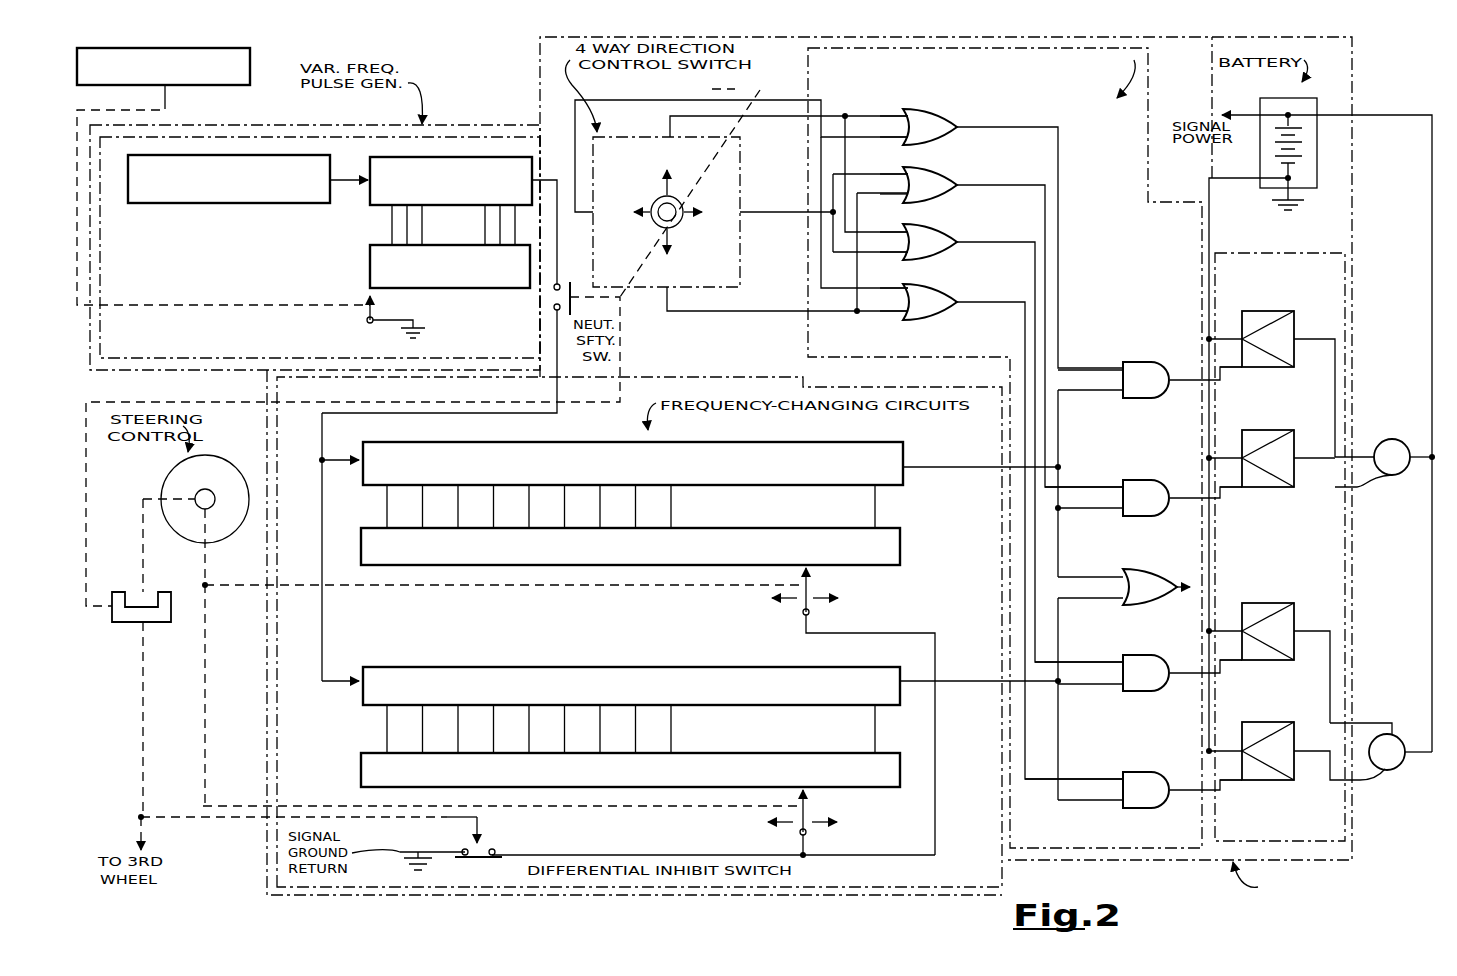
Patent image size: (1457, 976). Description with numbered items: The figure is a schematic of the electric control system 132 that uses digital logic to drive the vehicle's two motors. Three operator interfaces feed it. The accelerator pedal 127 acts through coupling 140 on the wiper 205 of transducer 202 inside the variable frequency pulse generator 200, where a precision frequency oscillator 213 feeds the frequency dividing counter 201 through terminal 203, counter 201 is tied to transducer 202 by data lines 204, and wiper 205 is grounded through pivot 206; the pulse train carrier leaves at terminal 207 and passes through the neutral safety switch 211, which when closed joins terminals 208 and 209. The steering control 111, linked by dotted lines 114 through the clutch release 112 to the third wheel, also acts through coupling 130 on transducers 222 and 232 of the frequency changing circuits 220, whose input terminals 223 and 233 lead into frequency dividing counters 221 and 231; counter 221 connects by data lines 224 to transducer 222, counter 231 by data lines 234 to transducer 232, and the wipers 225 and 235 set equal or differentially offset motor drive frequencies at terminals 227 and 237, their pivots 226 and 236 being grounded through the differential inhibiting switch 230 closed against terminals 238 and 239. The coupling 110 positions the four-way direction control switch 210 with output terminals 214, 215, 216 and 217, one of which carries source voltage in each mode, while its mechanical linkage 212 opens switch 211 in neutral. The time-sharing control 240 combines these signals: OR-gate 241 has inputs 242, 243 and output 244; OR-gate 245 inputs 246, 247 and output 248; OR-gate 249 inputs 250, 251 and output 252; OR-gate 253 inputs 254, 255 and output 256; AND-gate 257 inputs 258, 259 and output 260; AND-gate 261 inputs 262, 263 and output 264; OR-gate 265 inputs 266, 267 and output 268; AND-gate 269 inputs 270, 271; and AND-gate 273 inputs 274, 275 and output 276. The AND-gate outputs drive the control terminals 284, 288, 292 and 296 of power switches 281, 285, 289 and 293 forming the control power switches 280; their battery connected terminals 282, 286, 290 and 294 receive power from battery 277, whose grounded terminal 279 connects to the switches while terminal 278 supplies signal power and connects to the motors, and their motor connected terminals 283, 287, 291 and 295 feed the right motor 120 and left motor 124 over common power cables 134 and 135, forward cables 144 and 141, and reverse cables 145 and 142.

The coupling 110 is at (756, 92).
The steering control 111 is at (168, 478).
The clutch release 112 is at (130, 592).
The dotted lines 114 is at (141, 655).
The right motor 120 is at (1398, 440).
The left motor 124 is at (1408, 766).
The accelerator pedal 127 is at (250, 50).
The coupling 130 is at (142, 559).
The electric control system 132 is at (262, 713).
The power cable 134 is at (1428, 470).
The power cable 135 is at (1406, 728).
The coupling 140 is at (166, 104).
The power cable 141 is at (1392, 731).
The power cable 142 is at (1370, 784).
The power cable 144 is at (1380, 447).
The power cable 145 is at (1350, 489).
The variable frequency pulse generator 200 is at (288, 134).
The frequency dividing counter 201 is at (531, 158).
The transducer 202 is at (370, 245).
The terminal 203 is at (366, 183).
The data lines 204 is at (483, 226).
The wiper 205 is at (375, 306).
The pivot 206 is at (369, 323).
The terminal 207 is at (534, 177).
The terminal 208 is at (553, 289).
The terminal 209 is at (553, 310).
The four-way direction control switch 210 is at (742, 184).
The neutral safety switch 211 is at (574, 282).
The mechanical linkage 212 is at (614, 300).
The precision frequency oscillator 213 is at (307, 155).
The output terminal 214 is at (593, 213).
The output terminal 215 is at (670, 136).
The output terminal 216 is at (670, 296).
The output terminal 217 is at (765, 214).
The frequency changing circuits 220 is at (723, 374).
The frequency dividing counter 221 is at (896, 443).
The transducer 222 is at (903, 526).
The terminal 223 is at (322, 462).
The data lines 224 is at (676, 510).
The wiper 225 is at (810, 596).
The pivot 226 is at (804, 616).
The terminal 227 is at (906, 470).
The differential inhibiting switch 230 is at (479, 859).
The frequency dividing counter 231 is at (881, 662).
The transducer 232 is at (889, 750).
The terminal 233 is at (322, 684).
The data lines 234 is at (671, 728).
The wiper 235 is at (807, 814).
The pivot 236 is at (806, 834).
The terminal 237 is at (906, 680).
The terminal 238 is at (499, 848).
The terminal 239 is at (462, 850).
The time-sharing control 240 is at (808, 60).
The OR-gate 241 is at (950, 118).
The input terminal 242 is at (903, 114).
The input terminal 243 is at (904, 138).
The output terminal 244 is at (966, 126).
The OR-gate 245 is at (952, 176).
The input terminal 246 is at (904, 174).
The input terminal 247 is at (905, 194).
The output terminal 248 is at (968, 184).
The OR-gate 249 is at (950, 233).
The input terminal 250 is at (905, 231).
The input terminal 251 is at (903, 255).
The output terminal 252 is at (965, 241).
The OR-gate 253 is at (947, 293).
The input terminal 254 is at (904, 287).
The input terminal 255 is at (882, 312).
The output terminal 256 is at (962, 301).
The AND-gate 257 is at (1152, 364).
The input terminal 258 is at (1106, 370).
The input terminal 259 is at (1108, 394).
The output terminal 260 is at (1188, 386).
The AND-gate 261 is at (1155, 488).
The input terminal 262 is at (1108, 485).
The input terminal 263 is at (1108, 513).
The output terminal 264 is at (1188, 502).
The OR-gate 265 is at (1152, 577).
The input terminal 266 is at (1102, 571).
The input terminal 267 is at (1104, 600).
The output terminal 268 is at (1183, 593).
The AND-gate 269 is at (1145, 663).
The input terminal 270 is at (1100, 661).
The AND gate input 271 is at (1102, 687).
The AND-gate 273 is at (1188, 678).
The input terminal 274 is at (1100, 781).
The input terminal 275 is at (1098, 802).
The output terminal 276 is at (1186, 795).
The battery 277 is at (1300, 100).
The terminal 278 is at (1292, 114).
The terminal 279 is at (1286, 180).
The control power switches 280 is at (1347, 824).
The power switch 281 is at (1294, 311).
The battery connected terminal 282 is at (1231, 337).
The motor connected terminal 283 is at (1296, 342).
The control terminal 284 is at (1242, 367).
The power switch 285 is at (1280, 426).
The battery connected terminal 286 is at (1230, 457).
The motor connected terminal 287 is at (1301, 457).
The control terminal 288 is at (1240, 487).
The power switch 289 is at (1280, 602).
The battery connected terminal 290 is at (1228, 630).
The motor connected terminal 291 is at (1303, 633).
The control terminal 292 is at (1240, 660).
The power switch 293 is at (1276, 721).
The battery connected terminal 294 is at (1224, 750).
The motor connected terminal 295 is at (1301, 751).
The control terminal 296 is at (1238, 780).